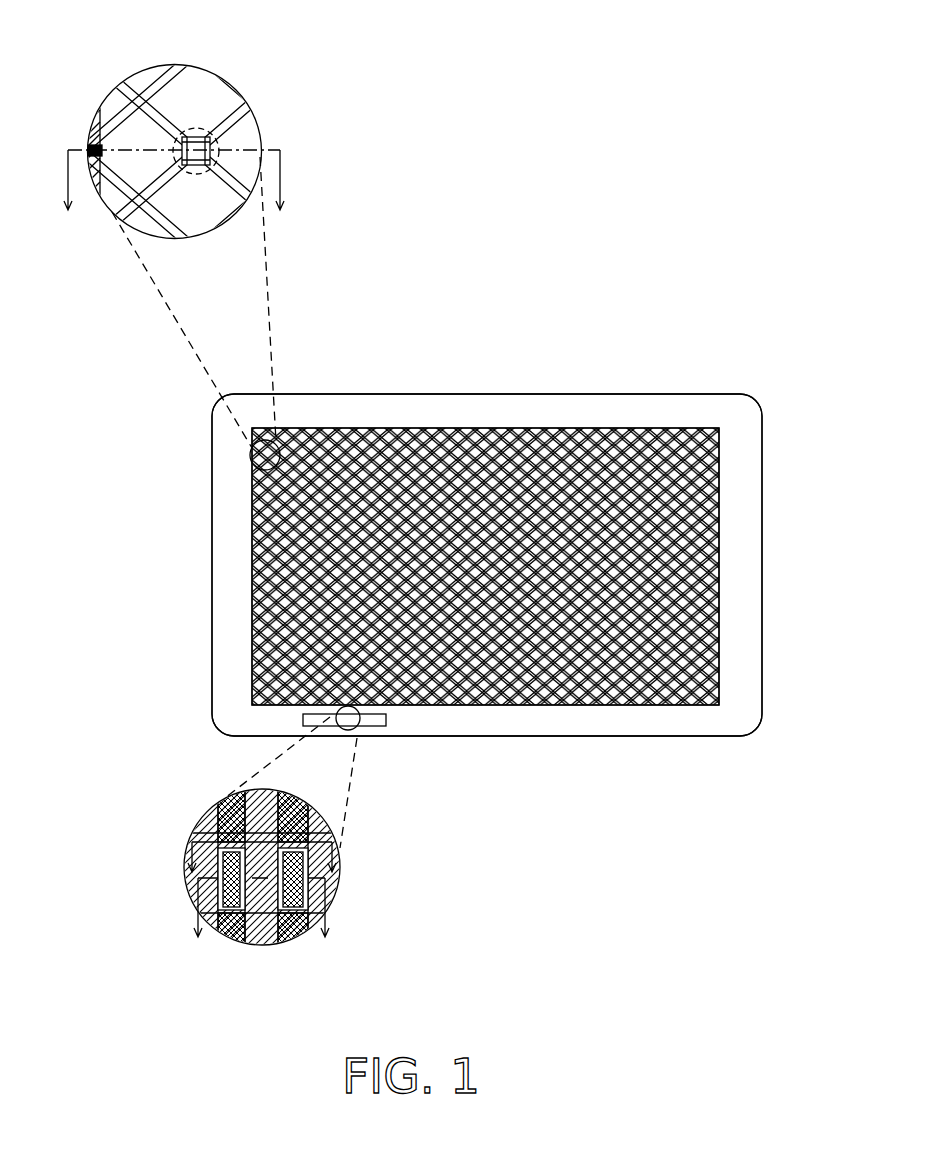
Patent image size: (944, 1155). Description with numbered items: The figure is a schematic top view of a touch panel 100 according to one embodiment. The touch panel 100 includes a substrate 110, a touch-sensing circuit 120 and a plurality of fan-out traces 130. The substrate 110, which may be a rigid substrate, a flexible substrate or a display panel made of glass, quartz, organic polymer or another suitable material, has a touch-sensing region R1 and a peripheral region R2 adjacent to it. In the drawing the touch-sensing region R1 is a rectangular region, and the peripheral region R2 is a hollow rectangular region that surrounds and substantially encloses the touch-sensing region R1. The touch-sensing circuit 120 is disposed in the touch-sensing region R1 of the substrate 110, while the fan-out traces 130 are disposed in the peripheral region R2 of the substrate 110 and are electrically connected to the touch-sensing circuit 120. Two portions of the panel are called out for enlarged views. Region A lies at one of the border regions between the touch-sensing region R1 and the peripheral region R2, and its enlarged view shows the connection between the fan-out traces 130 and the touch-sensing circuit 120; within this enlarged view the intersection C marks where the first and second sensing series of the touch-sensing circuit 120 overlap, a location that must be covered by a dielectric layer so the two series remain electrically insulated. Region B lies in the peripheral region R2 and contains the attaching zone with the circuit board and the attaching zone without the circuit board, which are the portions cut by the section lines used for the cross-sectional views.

The touch panel 100 is at (858, 749).
The substrate 110 is at (719, 576).
The touch-sensing circuit 120 is at (253, 39).
The fan-out traces 130 is at (158, 814).
The touch-sensing region R1 is at (712, 477).
The peripheral region R2 is at (746, 522).
The region A is at (257, 464).
The region B is at (355, 721).
The intersection C is at (197, 128).